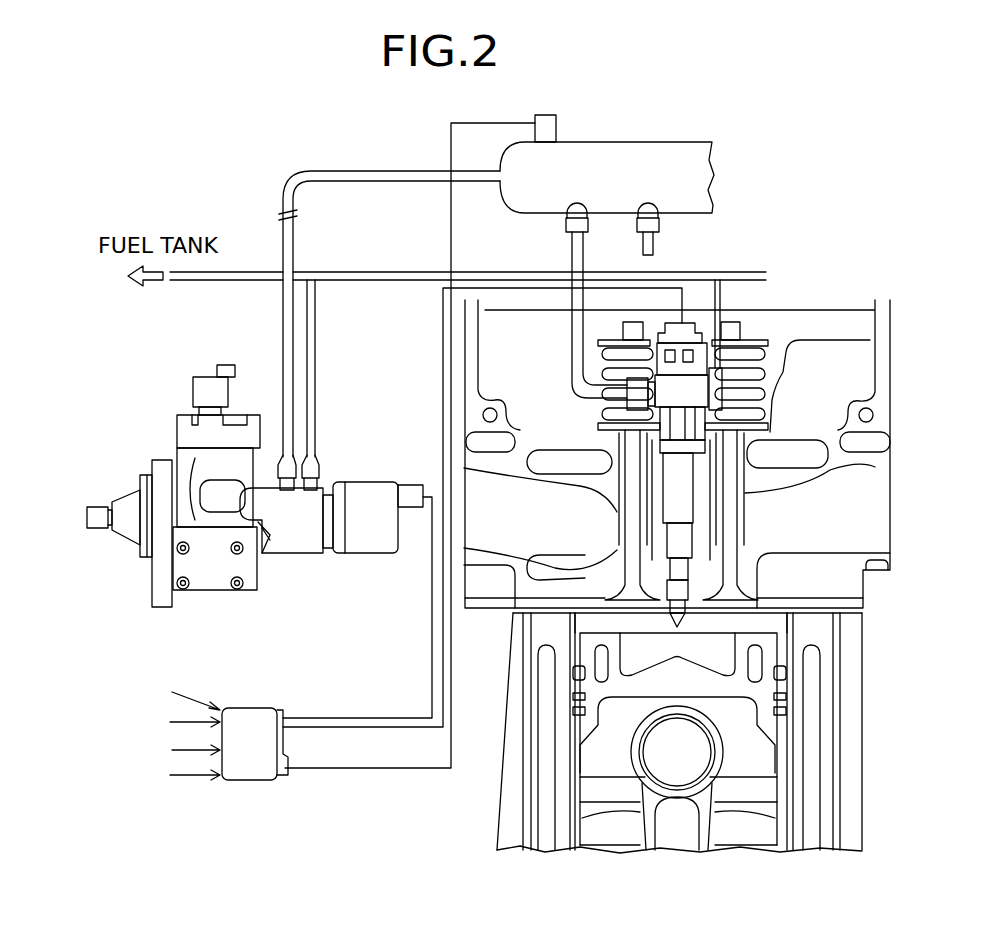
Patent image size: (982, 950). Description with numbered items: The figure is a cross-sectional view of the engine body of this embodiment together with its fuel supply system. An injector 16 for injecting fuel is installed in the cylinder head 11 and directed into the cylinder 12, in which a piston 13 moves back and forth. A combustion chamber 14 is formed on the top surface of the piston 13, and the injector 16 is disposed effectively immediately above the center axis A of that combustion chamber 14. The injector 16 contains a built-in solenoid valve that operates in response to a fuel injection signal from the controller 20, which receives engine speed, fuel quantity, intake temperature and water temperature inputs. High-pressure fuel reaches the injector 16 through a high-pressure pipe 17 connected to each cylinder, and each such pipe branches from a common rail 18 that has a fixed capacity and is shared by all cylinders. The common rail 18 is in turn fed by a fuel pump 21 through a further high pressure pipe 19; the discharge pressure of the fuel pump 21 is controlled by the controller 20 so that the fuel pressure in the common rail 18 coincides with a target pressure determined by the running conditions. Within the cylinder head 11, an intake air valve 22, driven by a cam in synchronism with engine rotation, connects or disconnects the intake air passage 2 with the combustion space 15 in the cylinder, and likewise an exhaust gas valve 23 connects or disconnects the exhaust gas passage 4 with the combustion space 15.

The intake air passage 2 is at (705, 604).
The exhaust gas passage 4 is at (823, 541).
The cylinder head 11 is at (790, 589).
The cylinder 12 is at (795, 787).
The piston 13 is at (749, 771).
The combustion chamber 14 is at (720, 660).
The combustion space 15 is at (723, 623).
The injector 16 is at (677, 503).
The high-pressure pipe 17 is at (572, 256).
The common rail 18 is at (622, 155).
The high pressure pipe 19 is at (312, 168).
The controller 20 is at (257, 708).
The fuel pump 21 is at (305, 548).
The intake air valve 22 is at (632, 547).
The exhaust gas valve 23 is at (727, 553).
The center axis A is at (677, 732).